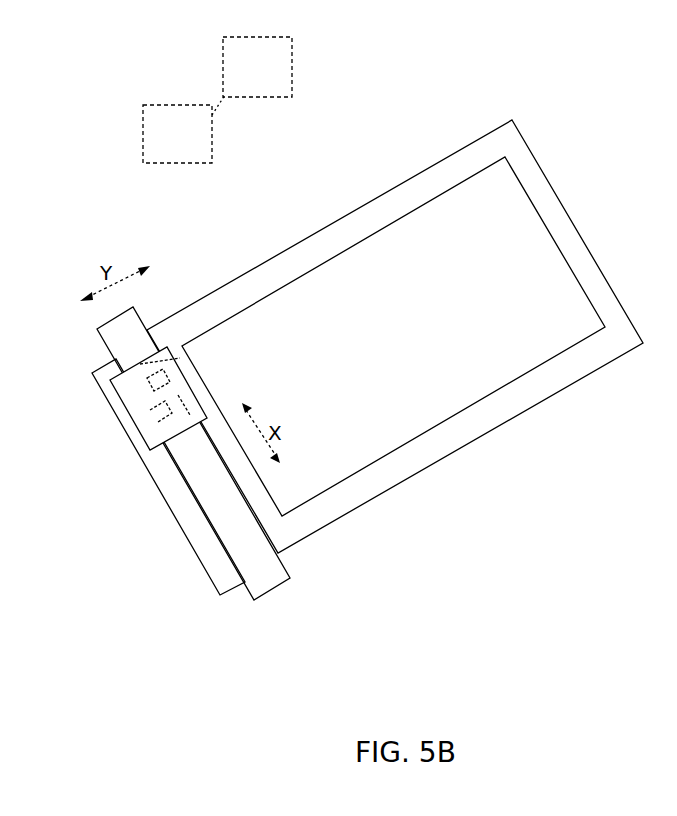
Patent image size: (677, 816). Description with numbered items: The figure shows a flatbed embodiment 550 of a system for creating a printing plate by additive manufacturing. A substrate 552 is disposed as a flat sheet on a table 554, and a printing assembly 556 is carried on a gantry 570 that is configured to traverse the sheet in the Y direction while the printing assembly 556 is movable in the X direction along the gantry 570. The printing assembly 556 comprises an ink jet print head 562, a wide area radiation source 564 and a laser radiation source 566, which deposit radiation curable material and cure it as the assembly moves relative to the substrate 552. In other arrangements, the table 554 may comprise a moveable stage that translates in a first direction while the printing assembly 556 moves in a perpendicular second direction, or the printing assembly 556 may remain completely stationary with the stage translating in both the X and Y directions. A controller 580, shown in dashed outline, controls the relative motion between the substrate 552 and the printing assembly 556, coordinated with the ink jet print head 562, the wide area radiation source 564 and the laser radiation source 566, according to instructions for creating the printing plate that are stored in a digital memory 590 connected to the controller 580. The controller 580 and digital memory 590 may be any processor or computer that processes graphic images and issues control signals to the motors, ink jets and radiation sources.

The flatbed embodiment 550 is at (395, 372).
The substrate 552 is at (400, 376).
The table 554 is at (492, 420).
The printing assembly 556 is at (132, 417).
The ink jet print head 562 is at (168, 443).
The wide area radiation source 564 is at (168, 395).
The laser radiation source 566 is at (145, 378).
The gantry 570 is at (278, 580).
The controller 580 is at (186, 352).
The digital memory 590 is at (277, 81).